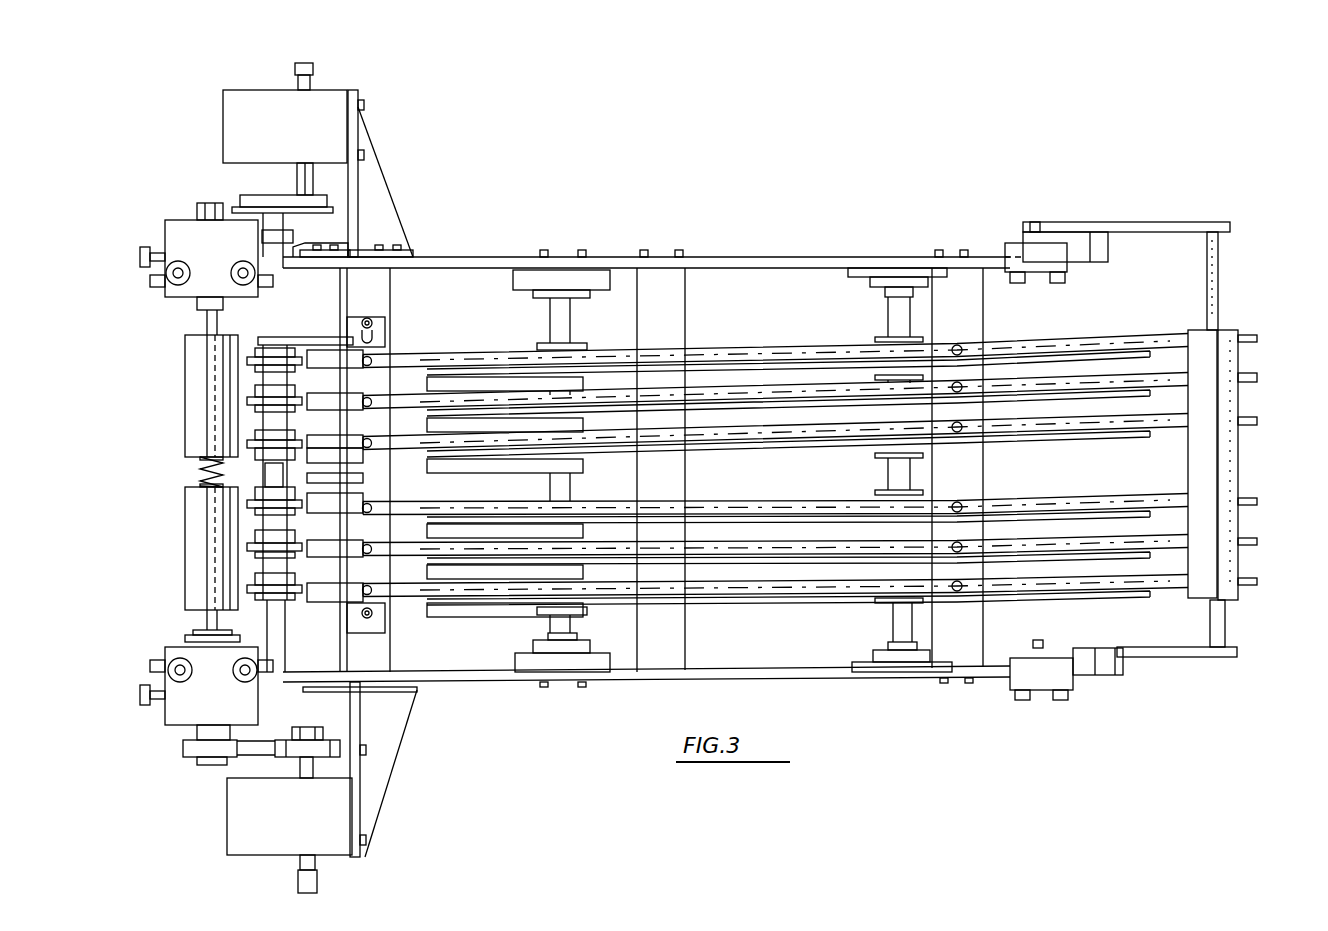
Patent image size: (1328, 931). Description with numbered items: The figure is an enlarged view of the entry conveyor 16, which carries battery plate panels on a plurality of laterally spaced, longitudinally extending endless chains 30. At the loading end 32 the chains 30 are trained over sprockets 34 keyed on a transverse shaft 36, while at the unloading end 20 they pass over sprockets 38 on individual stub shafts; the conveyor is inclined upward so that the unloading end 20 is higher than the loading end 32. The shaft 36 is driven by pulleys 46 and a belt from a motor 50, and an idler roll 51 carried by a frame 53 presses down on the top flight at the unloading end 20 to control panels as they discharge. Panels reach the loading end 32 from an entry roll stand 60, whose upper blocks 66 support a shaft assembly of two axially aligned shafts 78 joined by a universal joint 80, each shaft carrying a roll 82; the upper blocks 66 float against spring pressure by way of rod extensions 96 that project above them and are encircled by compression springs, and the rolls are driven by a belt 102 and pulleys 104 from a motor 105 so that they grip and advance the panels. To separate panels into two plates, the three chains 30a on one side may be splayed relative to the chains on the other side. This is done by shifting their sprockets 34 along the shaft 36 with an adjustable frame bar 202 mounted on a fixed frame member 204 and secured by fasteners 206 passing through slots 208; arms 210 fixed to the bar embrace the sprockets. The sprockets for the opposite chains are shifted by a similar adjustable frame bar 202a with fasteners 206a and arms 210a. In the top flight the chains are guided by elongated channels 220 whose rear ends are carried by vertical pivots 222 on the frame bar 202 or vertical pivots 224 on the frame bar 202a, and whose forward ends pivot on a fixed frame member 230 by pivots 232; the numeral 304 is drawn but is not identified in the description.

The entry conveyor 16 is at (846, 686).
The unloading end 20 is at (1238, 330).
The chains 30 is at (1055, 345).
The chains adjacent one side 30a is at (452, 440).
The loading end 32 is at (250, 330).
The sprockets 34 is at (250, 363).
The transverse shaft 36 is at (265, 628).
The sprockets 38 is at (1258, 352).
The pulleys 46 is at (265, 200).
The motor 50 is at (297, 190).
The idler roll 51 is at (1240, 468).
The frame 53 is at (1160, 228).
The entry roll stand 60 is at (147, 226).
The upper blocks 66 is at (178, 222).
The shafts 78 is at (205, 618).
The universal joint 80 is at (205, 472).
The rolls 82 is at (185, 357).
The rod extensions 96 is at (240, 268).
The belt 102 is at (265, 760).
The pulleys 104 is at (190, 758).
The motor 105 is at (293, 878).
The adjustable frame bar 202 is at (388, 325).
The adjustable frame bar 202a is at (388, 608).
The fixed frame member 204 is at (342, 290).
The fasteners 206 is at (365, 320).
The fasteners 206a is at (385, 615).
The slots 208 is at (363, 335).
The arms 210 is at (385, 333).
The arms 210a is at (328, 493).
The elongated channels 220 is at (733, 420).
The vertical pivots 222 is at (365, 350).
The vertical pivots 224 is at (385, 510).
The fixed frame member 230 is at (985, 300).
The pivots 232 is at (962, 356).
The rod sets 304 is at (660, 590).